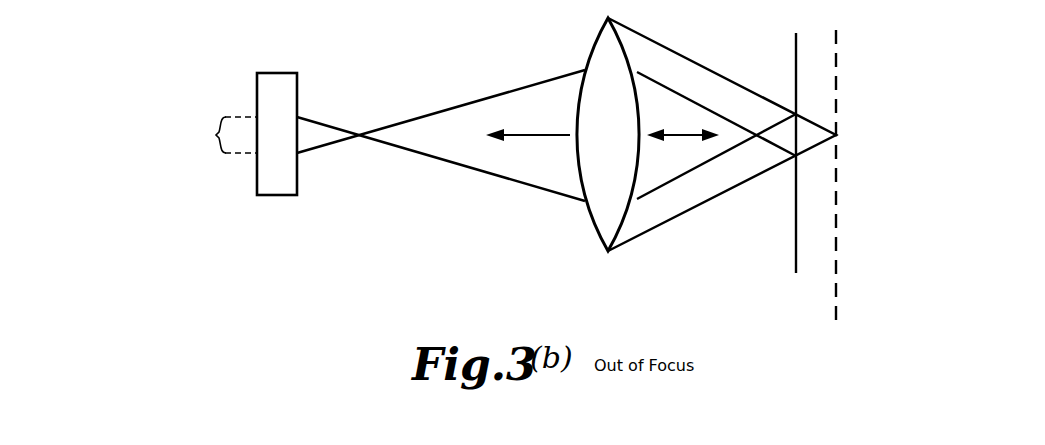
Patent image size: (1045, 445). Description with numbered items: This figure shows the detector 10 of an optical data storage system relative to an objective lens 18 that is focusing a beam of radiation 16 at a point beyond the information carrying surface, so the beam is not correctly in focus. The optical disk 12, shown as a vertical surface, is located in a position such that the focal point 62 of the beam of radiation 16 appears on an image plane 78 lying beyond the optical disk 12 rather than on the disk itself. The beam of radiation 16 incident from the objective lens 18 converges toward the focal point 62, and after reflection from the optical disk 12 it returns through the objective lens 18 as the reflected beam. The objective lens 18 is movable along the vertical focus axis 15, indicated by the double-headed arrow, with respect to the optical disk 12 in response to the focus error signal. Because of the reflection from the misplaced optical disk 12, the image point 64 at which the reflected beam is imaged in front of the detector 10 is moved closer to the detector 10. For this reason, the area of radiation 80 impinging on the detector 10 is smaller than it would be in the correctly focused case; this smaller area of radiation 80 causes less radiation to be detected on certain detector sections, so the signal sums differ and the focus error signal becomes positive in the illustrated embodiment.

The focus and tracking detector 10 is at (274, 73).
The optical disk 12 is at (797, 255).
The vertical focus axis 15 is at (668, 137).
The beam of radiation 16 is at (678, 216).
The objective lens 18 is at (593, 223).
The focal point 62 is at (839, 135).
The image point 64 is at (355, 135).
The image plane 78 is at (838, 305).
The area of radiation 80 is at (219, 135).